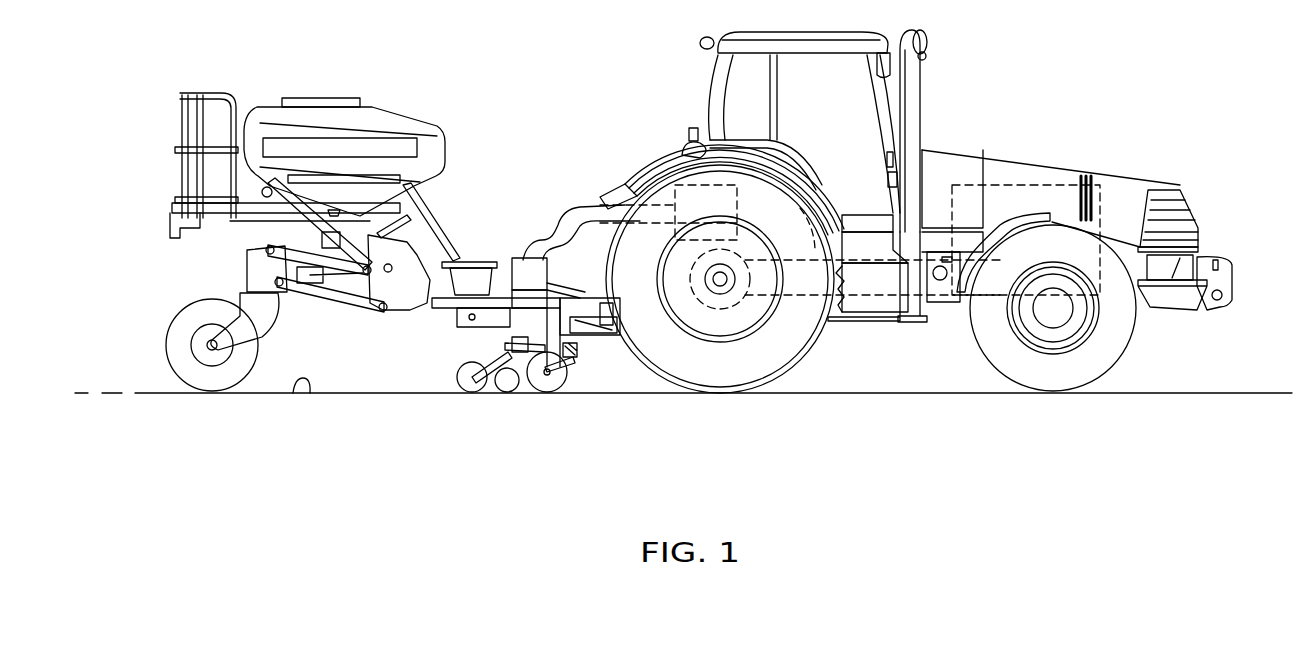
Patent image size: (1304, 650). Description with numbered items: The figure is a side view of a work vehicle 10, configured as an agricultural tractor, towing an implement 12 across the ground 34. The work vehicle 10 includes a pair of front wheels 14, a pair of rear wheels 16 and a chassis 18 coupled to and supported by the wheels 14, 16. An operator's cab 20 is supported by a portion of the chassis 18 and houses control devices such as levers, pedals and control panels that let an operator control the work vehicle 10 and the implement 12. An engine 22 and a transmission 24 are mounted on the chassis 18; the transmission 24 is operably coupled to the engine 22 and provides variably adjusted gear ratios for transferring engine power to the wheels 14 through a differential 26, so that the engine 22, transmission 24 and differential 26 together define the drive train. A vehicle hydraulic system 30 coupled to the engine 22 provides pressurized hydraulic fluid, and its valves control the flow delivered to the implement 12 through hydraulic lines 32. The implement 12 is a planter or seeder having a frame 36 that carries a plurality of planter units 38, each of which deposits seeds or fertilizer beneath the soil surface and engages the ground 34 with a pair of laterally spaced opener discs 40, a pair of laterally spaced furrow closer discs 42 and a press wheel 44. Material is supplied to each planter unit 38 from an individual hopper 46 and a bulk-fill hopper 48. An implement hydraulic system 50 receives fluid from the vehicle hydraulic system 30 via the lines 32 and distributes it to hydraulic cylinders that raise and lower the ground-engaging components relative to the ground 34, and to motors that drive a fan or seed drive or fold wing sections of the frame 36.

The work vehicle 10 is at (990, 63).
The implement 12 is at (525, 75).
The front wheels 14 is at (1108, 355).
The rear wheels 16 is at (783, 350).
The chassis 18 is at (950, 305).
The operator's cab 20 is at (795, 38).
The engine 22 is at (1030, 185).
The transmission 24 is at (818, 195).
The differential 26 is at (724, 320).
The vehicle hydraulic system 30 is at (684, 135).
The hydraulic lines 32 is at (600, 220).
The ground 34 is at (303, 393).
The frame 36 is at (582, 298).
The planter units 38 is at (470, 338).
The opener discs 40 is at (547, 395).
The furrow closer discs 42 is at (506, 392).
The press wheel 44 is at (468, 392).
The individual hopper 46 is at (472, 280).
The bulk-fill hopper 48 is at (378, 116).
The implement hydraulic system 50 is at (523, 268).